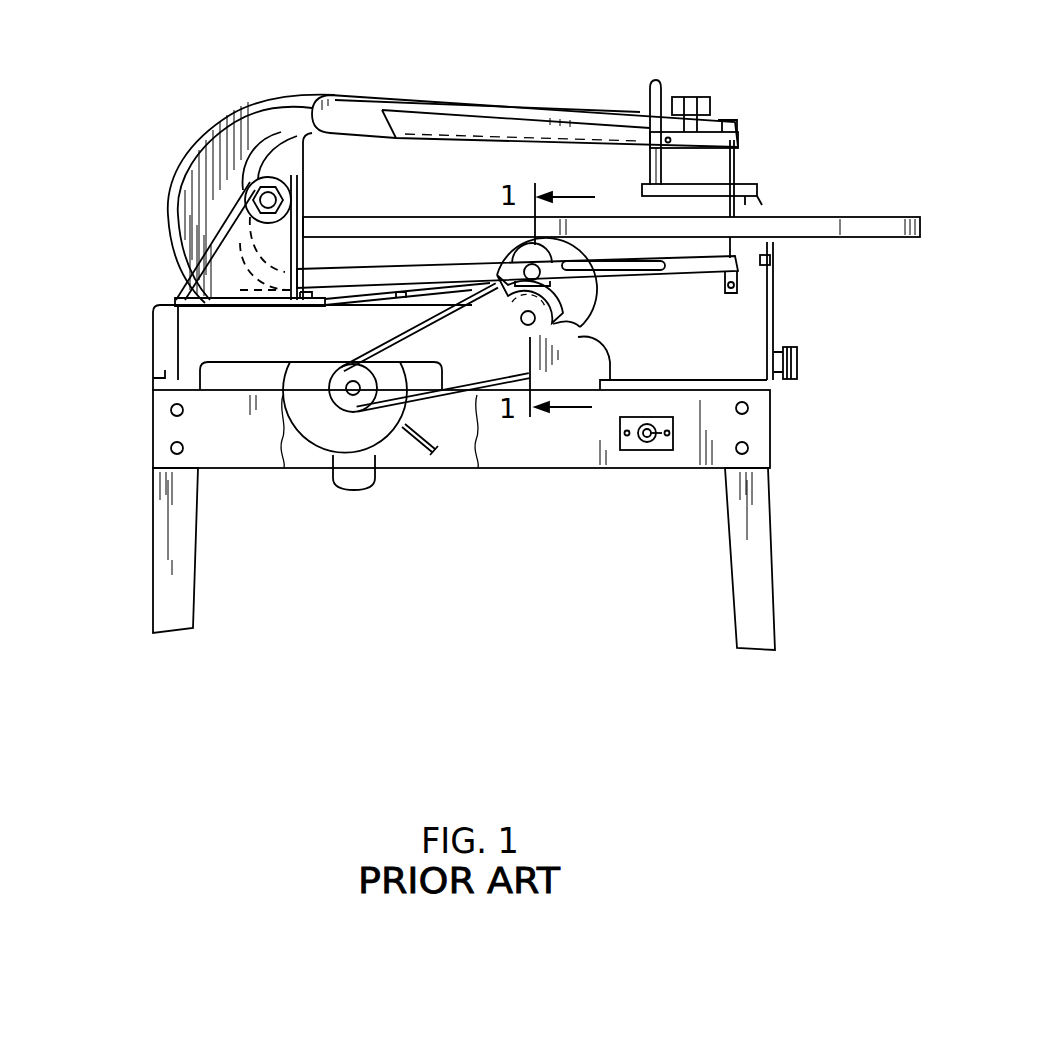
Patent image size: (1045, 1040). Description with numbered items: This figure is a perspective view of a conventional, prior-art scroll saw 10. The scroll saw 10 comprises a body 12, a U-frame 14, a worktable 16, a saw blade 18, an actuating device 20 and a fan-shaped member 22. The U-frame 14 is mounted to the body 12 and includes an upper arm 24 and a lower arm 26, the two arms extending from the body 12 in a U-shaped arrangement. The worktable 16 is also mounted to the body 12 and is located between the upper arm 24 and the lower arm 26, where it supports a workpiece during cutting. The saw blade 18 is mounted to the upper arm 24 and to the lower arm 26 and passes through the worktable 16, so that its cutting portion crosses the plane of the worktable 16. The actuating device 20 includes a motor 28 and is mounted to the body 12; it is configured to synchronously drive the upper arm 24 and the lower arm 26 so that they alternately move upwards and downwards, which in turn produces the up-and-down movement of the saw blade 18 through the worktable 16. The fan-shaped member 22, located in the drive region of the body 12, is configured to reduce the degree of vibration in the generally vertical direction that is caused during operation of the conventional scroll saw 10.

The scroll saw 10 is at (128, 105).
The body 12 is at (156, 292).
The U-frame 14 is at (250, 86).
The worktable 16 is at (815, 223).
The saw blade 18 is at (730, 166).
The actuating device 20 is at (443, 436).
The fan-shaped member 22 is at (566, 292).
The upper arm 24 is at (380, 100).
The lower arm 26 is at (418, 276).
The motor 28 is at (341, 423).